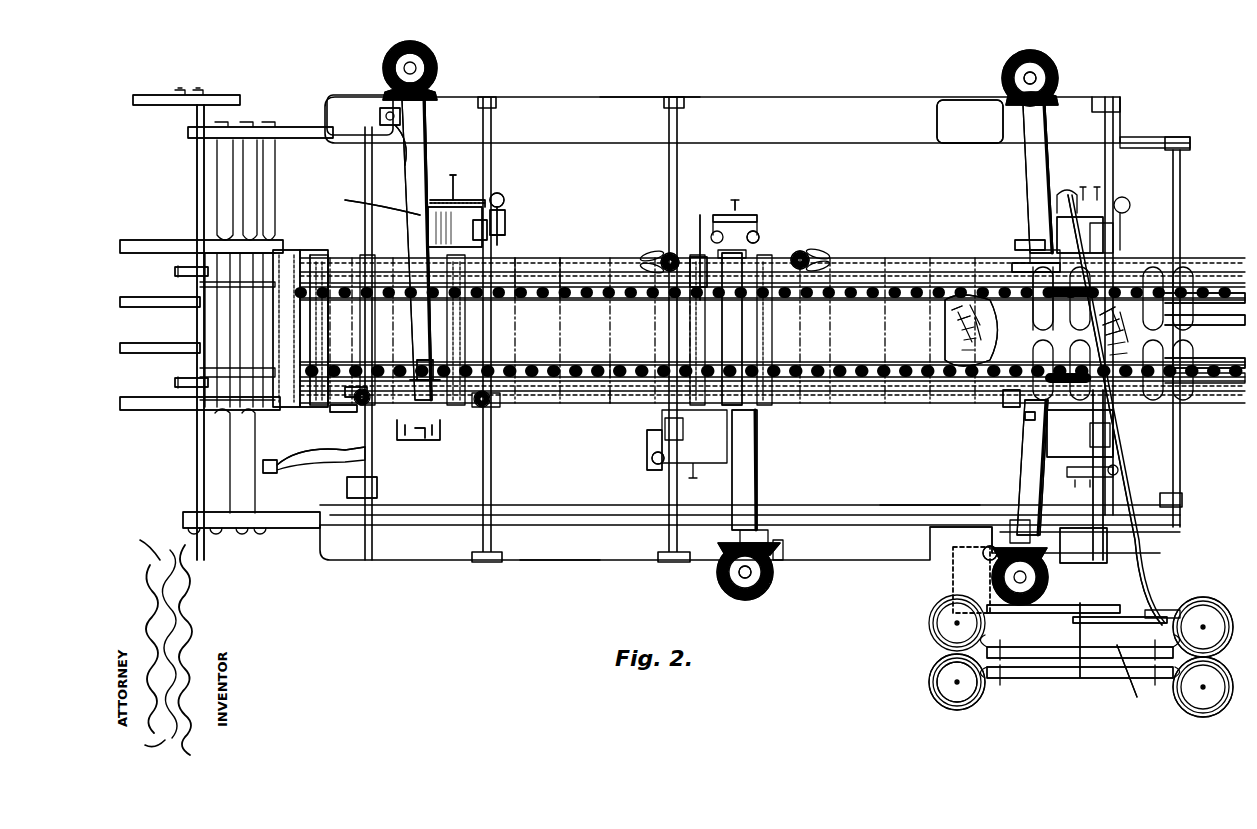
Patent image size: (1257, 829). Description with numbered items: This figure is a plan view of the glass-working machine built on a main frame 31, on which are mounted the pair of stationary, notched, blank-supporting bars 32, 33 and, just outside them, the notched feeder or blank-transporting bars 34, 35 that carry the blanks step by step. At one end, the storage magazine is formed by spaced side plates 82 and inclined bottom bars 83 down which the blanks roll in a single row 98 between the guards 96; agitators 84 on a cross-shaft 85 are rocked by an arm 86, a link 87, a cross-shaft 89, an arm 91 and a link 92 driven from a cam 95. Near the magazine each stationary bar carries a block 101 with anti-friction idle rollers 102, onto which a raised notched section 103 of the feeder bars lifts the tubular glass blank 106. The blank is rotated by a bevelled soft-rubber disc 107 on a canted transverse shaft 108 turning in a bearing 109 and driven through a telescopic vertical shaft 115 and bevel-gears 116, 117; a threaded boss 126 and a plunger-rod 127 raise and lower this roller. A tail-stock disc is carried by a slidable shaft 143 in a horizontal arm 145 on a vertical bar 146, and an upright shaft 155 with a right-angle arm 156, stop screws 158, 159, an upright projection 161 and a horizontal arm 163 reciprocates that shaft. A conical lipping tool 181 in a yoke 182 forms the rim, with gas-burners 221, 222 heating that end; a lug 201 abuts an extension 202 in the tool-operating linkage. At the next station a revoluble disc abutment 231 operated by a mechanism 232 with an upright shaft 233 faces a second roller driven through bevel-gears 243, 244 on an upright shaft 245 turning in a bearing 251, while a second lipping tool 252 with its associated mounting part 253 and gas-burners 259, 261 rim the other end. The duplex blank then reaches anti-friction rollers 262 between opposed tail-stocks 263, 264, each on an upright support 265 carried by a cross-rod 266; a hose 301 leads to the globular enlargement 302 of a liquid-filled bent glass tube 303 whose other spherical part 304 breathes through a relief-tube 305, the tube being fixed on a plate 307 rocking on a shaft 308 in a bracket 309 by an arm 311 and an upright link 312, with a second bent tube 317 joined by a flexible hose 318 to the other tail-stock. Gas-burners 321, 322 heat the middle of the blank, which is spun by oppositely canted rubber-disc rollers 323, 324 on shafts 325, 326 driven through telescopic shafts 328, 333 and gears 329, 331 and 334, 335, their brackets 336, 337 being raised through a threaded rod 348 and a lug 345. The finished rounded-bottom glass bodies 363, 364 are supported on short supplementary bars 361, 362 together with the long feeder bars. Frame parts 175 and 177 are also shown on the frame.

The main frame 31 is at (535, 545).
The blank-supporting bar 32 is at (543, 290).
The blank-supporting bar 33 is at (612, 368).
The notched feeder bar 34 is at (570, 270).
The notched feeder bar 35 is at (620, 397).
The side plate 82 is at (147, 400).
The bottom bar 83 is at (140, 349).
The agitator 84 is at (176, 382).
The cross-shaft 85 is at (199, 186).
The arm 86 is at (168, 97).
The link 87 is at (234, 97).
The cross-shaft 89 is at (370, 427).
The arm 91 is at (323, 461).
The link 92 is at (287, 458).
The cam 95 is at (200, 415).
The guard 96 is at (265, 258).
The single row 98 is at (292, 273).
The block 101 is at (455, 295).
The anti-friction idle roller 102 is at (437, 340).
The notched raised section 103 is at (362, 400).
The tubular glass blank 106 is at (318, 372).
The bevelled soft-rubber disc 107 is at (425, 433).
The transverse shaft 108 is at (437, 332).
The bearing 109 is at (416, 142).
The telescopic vertical shaft 115 is at (412, 64).
The bevel-gear 116 is at (436, 68).
The bevel-gear 117 is at (432, 93).
The threaded boss 126 is at (394, 132).
The plunger-rod 127 is at (380, 115).
The slidable shaft 143 is at (437, 196).
The horizontal arm 145 is at (510, 189).
The vertical bar 146 is at (490, 472).
The upright shaft 155 is at (506, 199).
The right-angle arm 156 is at (507, 229).
The stop screw 158 is at (505, 233).
The stop screw 159 is at (482, 173).
The upright projection 161 is at (482, 186).
The horizontal arm 163 is at (440, 186).
The column base block 175 is at (380, 492).
The frame rail 177 is at (928, 512).
The lipping tool 181 is at (419, 455).
The yoke 182 is at (432, 458).
The adjustable lug 201 is at (700, 265).
The arm extension 202 is at (735, 335).
The gas-burners 221 is at (343, 398).
The gas-burners 222 is at (488, 412).
The revoluble disc abutment 231 is at (746, 430).
The abutment-operating mechanism 232 is at (648, 445).
The upright shaft 233 is at (659, 464).
The bevel-gear 243 is at (720, 565).
The bevel-gear 244 is at (752, 598).
The upright shaft 245 is at (743, 574).
The bearing 251 is at (759, 481).
The second lipping tool 252 is at (758, 239).
The roller bracket 253 is at (757, 216).
The gas-burners 259 is at (670, 252).
The gas-burners 261 is at (812, 255).
The anti-friction rollers 262 is at (1055, 302).
The tail-stock 263 is at (1043, 228).
The tail-stock 264 is at (1036, 436).
The upright support 265 is at (1112, 442).
The cross-rod 266 is at (1098, 491).
The hose 301 is at (1050, 537).
The globular enlargement 302 is at (1200, 706).
The bent glass tube 303 is at (1100, 680).
The hollow spherical part 304 is at (932, 684).
The relief-tube 305 is at (950, 690).
The board or plate 307 is at (1020, 659).
The shaft 308 is at (1083, 613).
The bracket 309 is at (1015, 610).
The arm 311 is at (1140, 617).
The upright link 312 is at (1189, 608).
The second bent-glass tube 317 is at (1120, 650).
The flexible hose 318 is at (1141, 577).
The gas-burners 321 is at (952, 333).
The gas-burners 322 is at (1165, 298).
The bevelled rubber-disc roller 323 is at (1012, 264).
The bevelled rubber-disc roller 324 is at (1005, 397).
The shaft 325 is at (1037, 246).
The shaft 326 is at (1027, 419).
The telescopic shaft 328 is at (1032, 73).
The gear 329 is at (1057, 64).
The gear 331 is at (1060, 98).
The telescopic shaft 333 is at (967, 592).
The gear 334 is at (1046, 582).
The gear 335 is at (985, 549).
The bracket 336 is at (1033, 168).
The bracket 337 is at (1022, 495).
The lug 345 is at (984, 557).
The threaded adjustable rod 348 is at (1003, 98).
The supplementary bar 361 is at (1200, 323).
The supplementary bar 362 is at (1200, 350).
The finished glass body 363 is at (975, 303).
The finished glass body 364 is at (1183, 385).